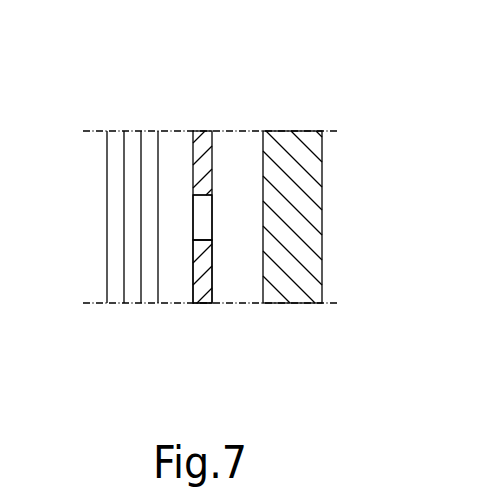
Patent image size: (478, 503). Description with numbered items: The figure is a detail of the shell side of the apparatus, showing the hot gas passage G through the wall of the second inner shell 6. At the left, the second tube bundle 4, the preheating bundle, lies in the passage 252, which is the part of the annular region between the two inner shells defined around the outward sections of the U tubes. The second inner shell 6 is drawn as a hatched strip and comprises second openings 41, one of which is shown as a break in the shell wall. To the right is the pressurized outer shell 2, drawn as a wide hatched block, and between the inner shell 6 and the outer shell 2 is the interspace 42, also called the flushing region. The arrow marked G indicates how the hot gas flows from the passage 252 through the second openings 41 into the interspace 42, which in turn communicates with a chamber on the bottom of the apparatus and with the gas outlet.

The outer shell 2 is at (298, 228).
The second tube bundle 4 is at (133, 127).
The second inner shell 6 is at (208, 134).
The second openings 41 is at (203, 210).
The interspace 42 is at (229, 277).
The passage 252 is at (78, 357).
The hot gas passage G is at (217, 226).